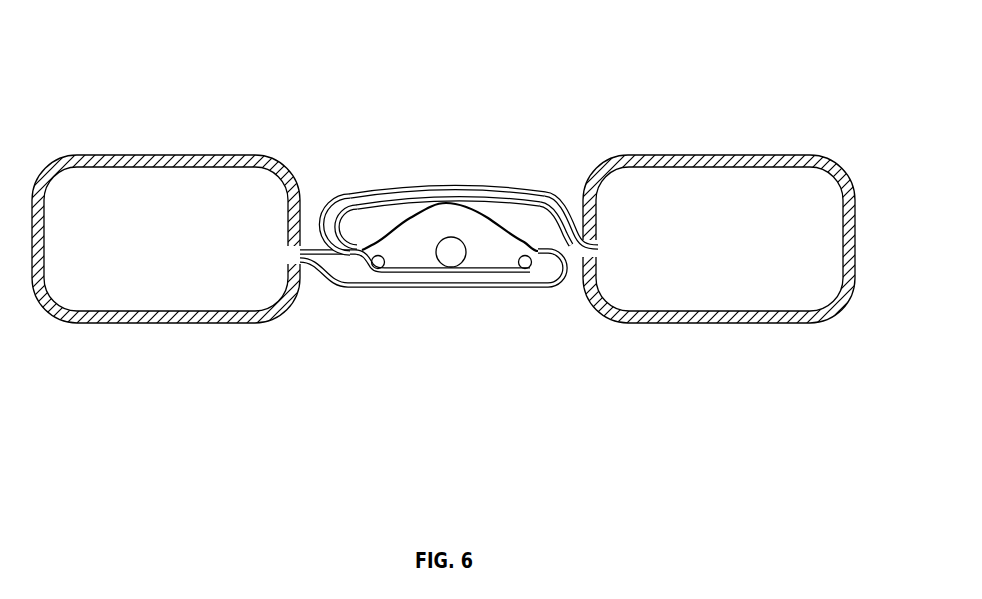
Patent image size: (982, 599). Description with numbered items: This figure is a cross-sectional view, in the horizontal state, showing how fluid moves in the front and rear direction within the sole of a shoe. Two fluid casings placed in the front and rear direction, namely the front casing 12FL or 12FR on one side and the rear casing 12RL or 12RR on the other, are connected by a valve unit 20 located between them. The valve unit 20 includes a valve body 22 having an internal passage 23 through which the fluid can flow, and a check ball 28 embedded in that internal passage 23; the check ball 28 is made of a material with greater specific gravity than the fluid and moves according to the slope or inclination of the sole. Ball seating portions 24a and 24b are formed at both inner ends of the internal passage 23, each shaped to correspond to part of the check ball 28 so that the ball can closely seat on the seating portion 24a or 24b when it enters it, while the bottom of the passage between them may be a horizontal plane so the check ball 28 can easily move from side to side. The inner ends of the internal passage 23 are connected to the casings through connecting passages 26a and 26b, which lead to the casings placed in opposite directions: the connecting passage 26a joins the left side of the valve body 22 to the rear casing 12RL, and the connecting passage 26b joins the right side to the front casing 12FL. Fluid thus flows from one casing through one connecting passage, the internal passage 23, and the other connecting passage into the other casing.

The fluid casing 12FL is at (167, 329).
The fluid casing 12FR is at (158, 323).
The fluid casing 12RL is at (717, 334).
The fluid casing 12RR is at (732, 323).
The valve unit 20 is at (456, 193).
The valve body 22 is at (494, 214).
The internal passage 23 is at (430, 228).
The ball seating portion 24a is at (378, 268).
The ball seating portion 24b is at (514, 268).
The connecting passage 26a is at (352, 238).
The connecting passage 26b is at (553, 208).
The check ball 28 is at (452, 254).